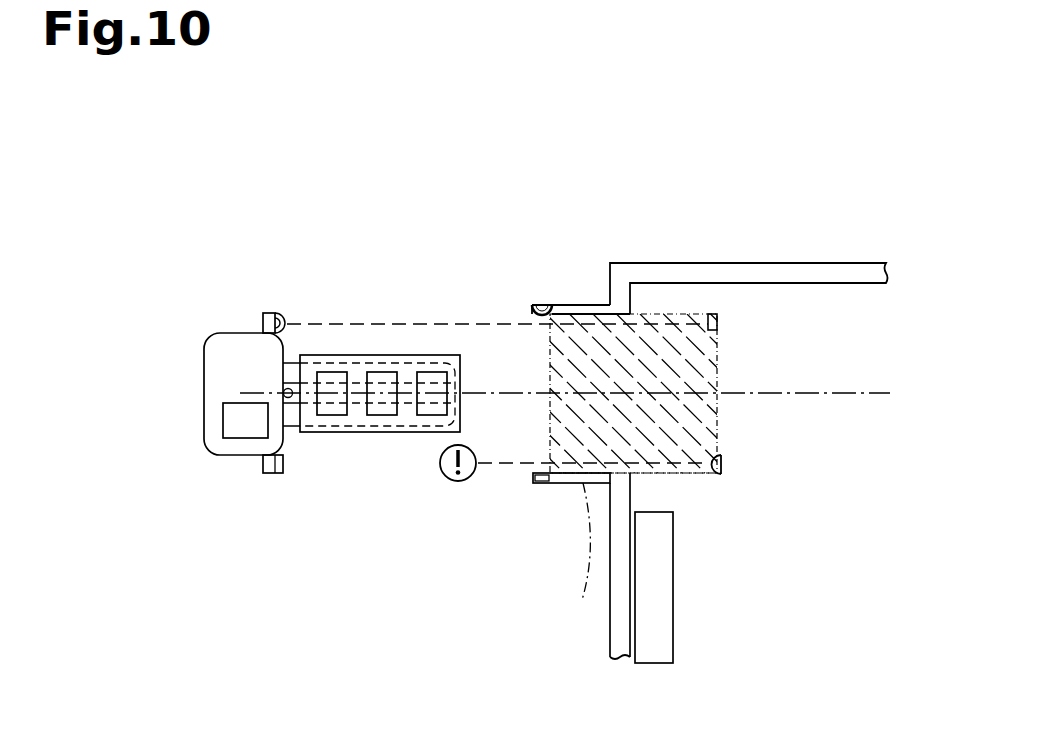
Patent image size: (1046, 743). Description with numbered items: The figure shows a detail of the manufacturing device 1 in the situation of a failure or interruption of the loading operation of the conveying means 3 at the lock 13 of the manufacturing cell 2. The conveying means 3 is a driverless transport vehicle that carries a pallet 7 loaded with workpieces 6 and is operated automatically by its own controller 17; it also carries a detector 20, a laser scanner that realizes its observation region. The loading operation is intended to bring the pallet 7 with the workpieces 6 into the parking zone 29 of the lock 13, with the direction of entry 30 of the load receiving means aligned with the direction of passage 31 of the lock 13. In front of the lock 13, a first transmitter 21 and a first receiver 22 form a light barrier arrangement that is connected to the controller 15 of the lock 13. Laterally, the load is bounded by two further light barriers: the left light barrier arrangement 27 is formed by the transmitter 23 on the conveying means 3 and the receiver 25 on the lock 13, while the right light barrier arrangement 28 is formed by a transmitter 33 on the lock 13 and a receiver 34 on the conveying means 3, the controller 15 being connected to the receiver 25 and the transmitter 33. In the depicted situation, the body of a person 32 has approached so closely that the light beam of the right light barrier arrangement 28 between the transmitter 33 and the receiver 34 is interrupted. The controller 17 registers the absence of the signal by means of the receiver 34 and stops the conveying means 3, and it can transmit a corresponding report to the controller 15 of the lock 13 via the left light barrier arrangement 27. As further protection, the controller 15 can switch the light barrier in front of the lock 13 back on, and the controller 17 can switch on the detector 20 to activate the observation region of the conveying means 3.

The manufacturing device 1 is at (98, 158).
The manufacturing cell 2 is at (812, 237).
The conveying means 3 is at (203, 487).
The workpieces 6 is at (327, 372).
The pallet 7 is at (325, 433).
The lock 13 is at (548, 533).
The controller of the lock 15 is at (690, 613).
The controller of the conveying means 17 is at (232, 422).
The detector 20 is at (283, 393).
The first transmitter 21 is at (533, 300).
The first receiver 22 is at (540, 488).
The transmitter 23 is at (250, 313).
The receiver 25 is at (728, 320).
The left light barrier arrangement 27 is at (443, 317).
The right light barrier arrangement 28 is at (657, 476).
The parking zone 29 is at (576, 560).
The direction of entry 30 is at (407, 392).
The direction of passage 31 is at (658, 395).
The person 32 is at (449, 490).
The transmitter 33 is at (724, 461).
The receiver 34 is at (278, 482).